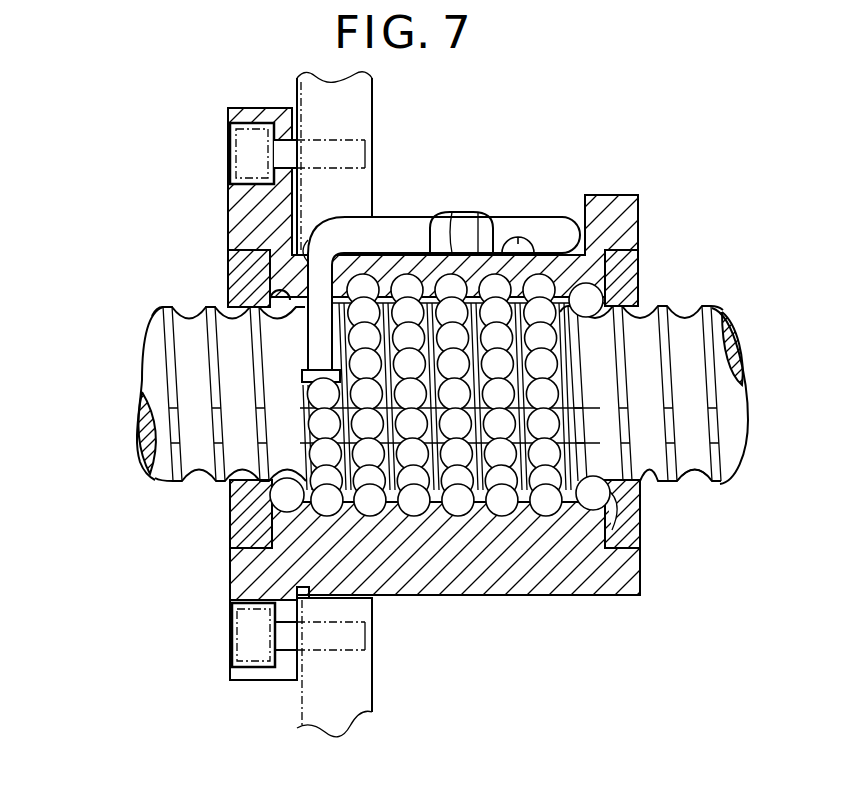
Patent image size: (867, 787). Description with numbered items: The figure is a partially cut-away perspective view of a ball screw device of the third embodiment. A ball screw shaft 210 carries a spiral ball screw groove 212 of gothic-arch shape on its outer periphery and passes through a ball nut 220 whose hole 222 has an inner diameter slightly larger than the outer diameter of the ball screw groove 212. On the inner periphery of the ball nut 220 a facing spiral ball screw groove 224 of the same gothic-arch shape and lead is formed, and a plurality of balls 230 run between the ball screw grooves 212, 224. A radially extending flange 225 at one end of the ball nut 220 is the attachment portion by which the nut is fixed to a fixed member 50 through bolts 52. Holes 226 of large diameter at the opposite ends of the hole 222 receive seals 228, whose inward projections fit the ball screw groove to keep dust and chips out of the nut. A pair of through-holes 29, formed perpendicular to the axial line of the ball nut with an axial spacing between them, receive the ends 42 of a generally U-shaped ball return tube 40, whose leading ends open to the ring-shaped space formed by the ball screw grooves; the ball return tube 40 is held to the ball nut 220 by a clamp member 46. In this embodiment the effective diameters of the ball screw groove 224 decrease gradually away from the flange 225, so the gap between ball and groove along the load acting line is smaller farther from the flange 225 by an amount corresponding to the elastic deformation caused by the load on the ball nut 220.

The through-holes 29 is at (310, 245).
The ball return tube 40 is at (331, 262).
The ends of ball return tube 42 is at (320, 329).
The clamp member 46 is at (462, 214).
The fixed member 50 is at (365, 104).
The bolts 52 is at (235, 158).
The ball screw shaft 210 is at (700, 299).
The ball screw groove 212 is at (695, 478).
The ball nut 220 is at (425, 394).
The hole 222 is at (640, 541).
The ball screw groove 224 is at (557, 502).
The flange 225 is at (232, 582).
The holes 226 is at (232, 256).
The seals 228 is at (232, 290).
The balls 230 is at (499, 492).